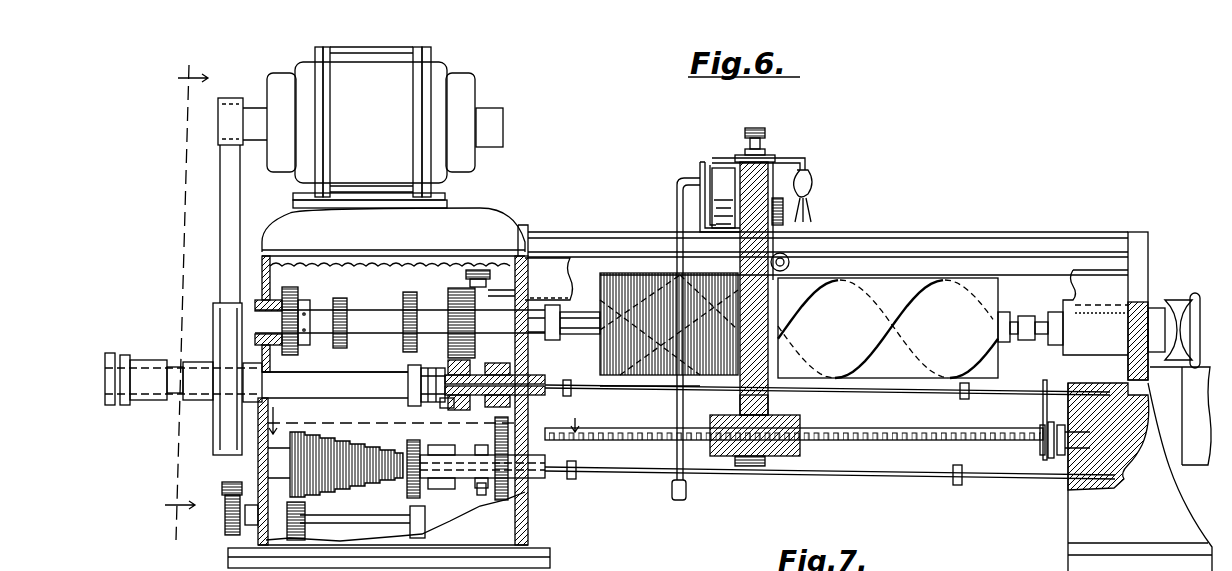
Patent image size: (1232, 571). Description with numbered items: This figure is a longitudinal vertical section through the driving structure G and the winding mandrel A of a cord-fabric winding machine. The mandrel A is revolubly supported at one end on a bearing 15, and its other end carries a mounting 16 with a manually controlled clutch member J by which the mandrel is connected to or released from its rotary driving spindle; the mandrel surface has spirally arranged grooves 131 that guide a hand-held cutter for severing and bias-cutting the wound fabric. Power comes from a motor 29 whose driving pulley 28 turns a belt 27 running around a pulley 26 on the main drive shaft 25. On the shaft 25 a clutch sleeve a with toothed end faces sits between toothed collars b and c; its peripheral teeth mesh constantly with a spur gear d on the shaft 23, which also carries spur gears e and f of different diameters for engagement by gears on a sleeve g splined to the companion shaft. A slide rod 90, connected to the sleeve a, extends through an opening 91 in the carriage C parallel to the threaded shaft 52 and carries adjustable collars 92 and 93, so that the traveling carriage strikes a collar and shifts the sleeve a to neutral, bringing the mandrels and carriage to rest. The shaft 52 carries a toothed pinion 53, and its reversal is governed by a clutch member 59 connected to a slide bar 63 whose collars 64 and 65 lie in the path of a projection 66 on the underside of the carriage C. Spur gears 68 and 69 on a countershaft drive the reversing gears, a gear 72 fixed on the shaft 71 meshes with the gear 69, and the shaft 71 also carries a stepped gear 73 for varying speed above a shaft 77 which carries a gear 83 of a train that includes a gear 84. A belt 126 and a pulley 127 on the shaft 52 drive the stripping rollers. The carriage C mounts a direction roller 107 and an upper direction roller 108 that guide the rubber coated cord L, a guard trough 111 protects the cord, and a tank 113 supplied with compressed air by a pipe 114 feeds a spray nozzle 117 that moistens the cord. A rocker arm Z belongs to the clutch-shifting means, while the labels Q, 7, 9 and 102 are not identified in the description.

The mounting 16 is at (594, 284).
The driving pulley 28 is at (218, 111).
The belt 27 is at (220, 208).
The pulley 26 is at (213, 432).
The motor 29 is at (276, 71).
The structure G is at (522, 210).
The shaft 23 is at (368, 312).
The gear Q is at (296, 299).
The spur gear e is at (408, 297).
The spur gear f is at (403, 356).
The spur gear d is at (450, 300).
The rocker arm Z is at (485, 270).
The toothed collar c is at (492, 363).
The toothed collar b is at (422, 365).
The clutch sleeve a is at (440, 414).
The sleeve g is at (531, 330).
The main drive shaft 25 is at (329, 392).
The stepped gear 73 is at (362, 490).
The spur gear 69 is at (404, 452).
The gear 72 is at (420, 490).
The clutch member 59 is at (440, 445).
The toothed pinion 53 is at (495, 434).
The shaft 71 is at (475, 488).
The spur gear 68 is at (482, 495).
The shaft 77 is at (355, 522).
The gear 83 is at (226, 530).
The gear 84 is at (222, 485).
The rack bar 7 is at (416, 419).
The clutch member J is at (566, 302).
The brush roller 9 is at (625, 322).
The carriage C is at (810, 148).
The liquid containing tank 113 is at (697, 160).
The adjusting knob 102 is at (749, 135).
The pipe 114 is at (677, 182).
The spray nozzle 117 is at (812, 174).
The direction roller 108 is at (783, 206).
The direction roller 107 is at (790, 262).
The winding mandrel A is at (878, 282).
The spirally arranged grooves 131 is at (910, 302).
The bearing 15 is at (1006, 342).
The guard trough 111 is at (1068, 290).
The rubber coated cord L is at (1176, 284).
The collar 92 is at (567, 380).
The collar 93 is at (963, 399).
The threaded shaft 52 is at (866, 428).
The slide rod 90 is at (645, 392).
The opening 91 is at (730, 405).
The slide bar 63 is at (635, 473).
The collar 64 is at (575, 480).
The collar 65 is at (957, 486).
The projection 66 is at (748, 466).
The belt 126 is at (1043, 410).
The pulley 127 is at (1040, 452).